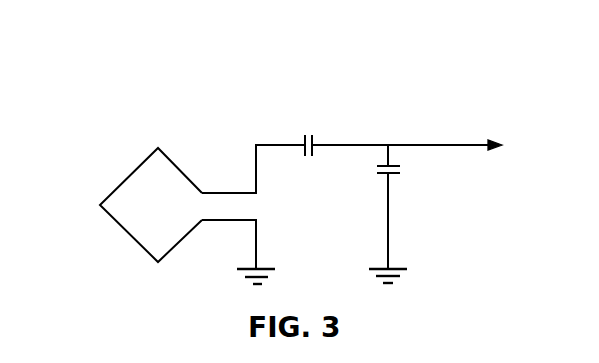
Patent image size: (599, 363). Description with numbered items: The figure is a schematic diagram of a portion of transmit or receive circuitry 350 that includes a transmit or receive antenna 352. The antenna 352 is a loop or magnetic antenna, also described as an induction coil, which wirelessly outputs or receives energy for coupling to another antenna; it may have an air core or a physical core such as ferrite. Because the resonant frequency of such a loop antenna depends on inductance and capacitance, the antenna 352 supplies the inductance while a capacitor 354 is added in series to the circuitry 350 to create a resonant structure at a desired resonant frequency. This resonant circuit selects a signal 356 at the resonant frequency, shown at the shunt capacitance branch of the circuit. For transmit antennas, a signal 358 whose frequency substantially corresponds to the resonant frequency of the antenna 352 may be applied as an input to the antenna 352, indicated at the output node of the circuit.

The transmit or receive circuitry 350 is at (193, 93).
The antenna 352 is at (127, 177).
The capacitor 354 is at (317, 138).
The signal 356 is at (390, 176).
The signal 358 is at (424, 145).